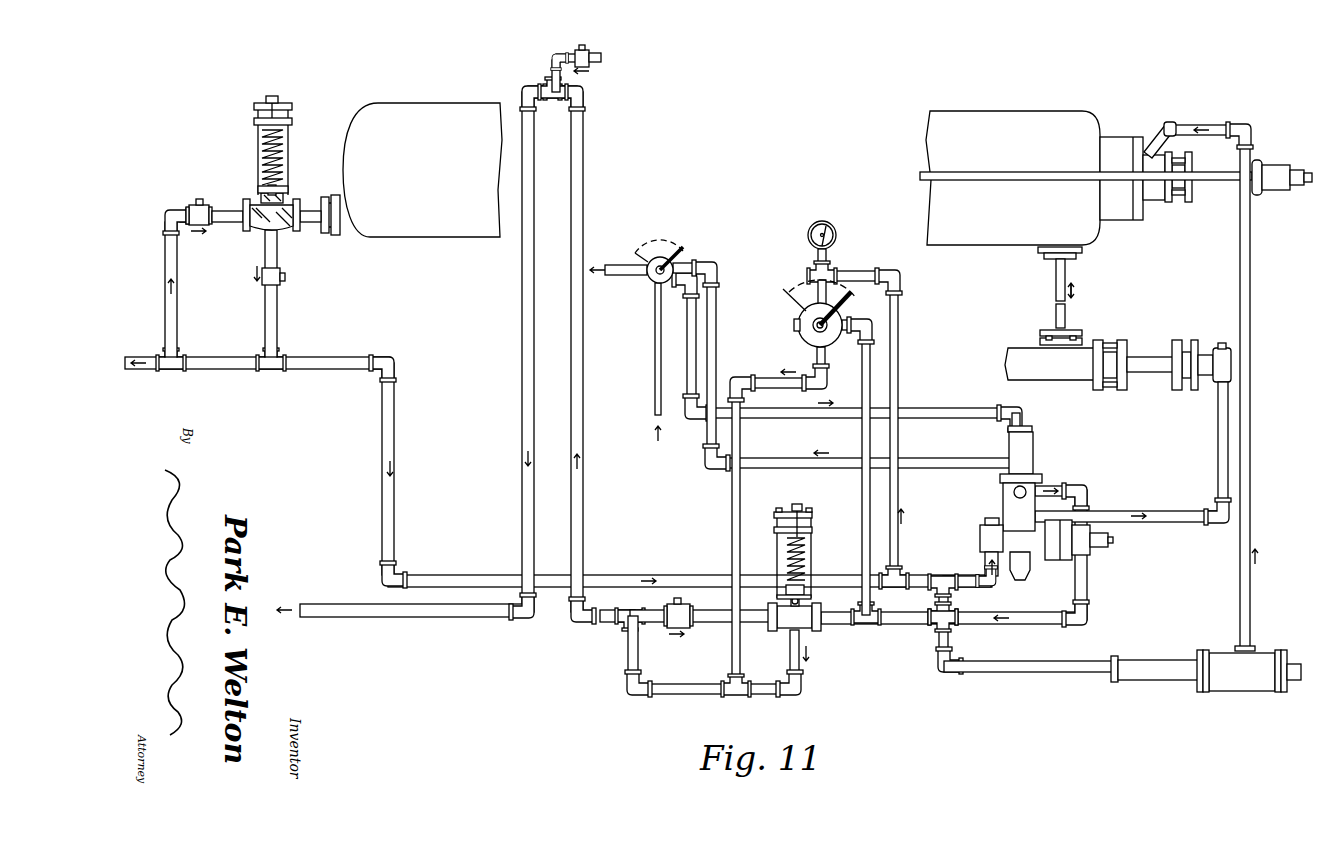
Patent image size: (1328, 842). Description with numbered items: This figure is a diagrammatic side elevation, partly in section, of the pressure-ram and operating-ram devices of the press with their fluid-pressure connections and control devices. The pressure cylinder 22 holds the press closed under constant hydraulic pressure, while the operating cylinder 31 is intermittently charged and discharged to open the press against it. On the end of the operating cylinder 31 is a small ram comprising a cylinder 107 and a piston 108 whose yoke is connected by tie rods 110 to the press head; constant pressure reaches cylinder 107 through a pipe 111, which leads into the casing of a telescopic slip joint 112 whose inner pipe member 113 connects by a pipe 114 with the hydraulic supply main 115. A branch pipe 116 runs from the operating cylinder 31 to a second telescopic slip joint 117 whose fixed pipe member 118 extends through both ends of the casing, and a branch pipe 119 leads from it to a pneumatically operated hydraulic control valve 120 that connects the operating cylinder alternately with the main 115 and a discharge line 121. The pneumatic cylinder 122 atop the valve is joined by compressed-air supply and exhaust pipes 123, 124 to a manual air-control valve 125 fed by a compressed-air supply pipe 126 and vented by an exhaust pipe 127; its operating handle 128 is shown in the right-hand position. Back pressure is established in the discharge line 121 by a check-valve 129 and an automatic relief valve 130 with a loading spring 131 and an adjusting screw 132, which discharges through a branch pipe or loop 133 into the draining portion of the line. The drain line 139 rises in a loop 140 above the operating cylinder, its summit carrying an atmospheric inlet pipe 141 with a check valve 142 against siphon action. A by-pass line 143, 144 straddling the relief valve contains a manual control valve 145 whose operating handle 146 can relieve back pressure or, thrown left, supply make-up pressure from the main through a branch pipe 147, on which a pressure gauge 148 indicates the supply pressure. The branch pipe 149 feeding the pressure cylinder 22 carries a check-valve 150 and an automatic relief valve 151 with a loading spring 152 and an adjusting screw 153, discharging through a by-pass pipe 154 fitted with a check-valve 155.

The cylinder 22 is at (398, 104).
The cylinder 31 is at (1000, 112).
The cylinder 107 is at (1155, 202).
The piston 108 is at (1222, 182).
The tie rods 110 is at (1053, 182).
The pipe 111 is at (1243, 270).
The telescopic slip joint 112 is at (1240, 678).
The pipe member 113 is at (1150, 660).
The pipe 114 is at (1045, 672).
The hydraulic supply main 115 is at (384, 430).
The branch pipe 116 is at (1055, 278).
The telescopic slip joint 117 is at (1022, 350).
The pipe member 118 is at (1143, 355).
The branch pipe 119 is at (1218, 460).
The hydraulic control valve 120 is at (1003, 505).
The discharge line 121 is at (915, 632).
The pneumatic cylinder 122 is at (1033, 445).
The compressed-air supply pipe 123 is at (982, 410).
The compressed-air exhaust pipe 124 is at (938, 460).
The air-control valve 125 is at (655, 283).
The compressed-air supply pipe 126 is at (655, 385).
The exhaust pipe 127 is at (615, 262).
The operating handle 128 is at (678, 245).
The check-valve 129 is at (679, 630).
The relief valve 130 is at (800, 635).
The loading spring 131 is at (805, 565).
The adjusting screw 132 is at (800, 508).
The branch pipe 133 is at (645, 696).
The drain line 139 is at (608, 625).
The loop 140 is at (521, 372).
The atmospheric inlet pipe 141 is at (553, 64).
The check valve 142 is at (590, 55).
The by-pass line 143 is at (862, 434).
The by-pass line 144 is at (732, 520).
The manual control valve 145 is at (800, 330).
The operating handle 146 is at (850, 298).
The branch pipe 147 is at (898, 378).
The pressure gauge 148 is at (825, 222).
The branch pipe 149 is at (178, 260).
The check-valve 150 is at (198, 204).
The relief valve 151 is at (285, 195).
The loading spring 152 is at (262, 165).
The adjusting screw 153 is at (272, 100).
The by-pass pipe 154 is at (278, 327).
The check-valve 155 is at (285, 280).